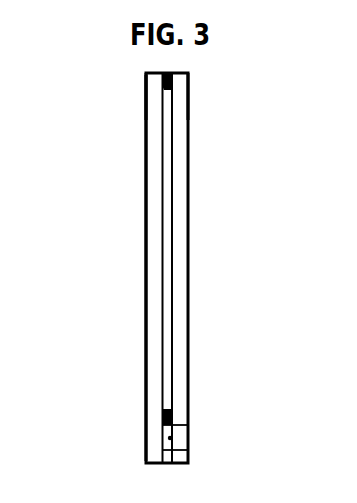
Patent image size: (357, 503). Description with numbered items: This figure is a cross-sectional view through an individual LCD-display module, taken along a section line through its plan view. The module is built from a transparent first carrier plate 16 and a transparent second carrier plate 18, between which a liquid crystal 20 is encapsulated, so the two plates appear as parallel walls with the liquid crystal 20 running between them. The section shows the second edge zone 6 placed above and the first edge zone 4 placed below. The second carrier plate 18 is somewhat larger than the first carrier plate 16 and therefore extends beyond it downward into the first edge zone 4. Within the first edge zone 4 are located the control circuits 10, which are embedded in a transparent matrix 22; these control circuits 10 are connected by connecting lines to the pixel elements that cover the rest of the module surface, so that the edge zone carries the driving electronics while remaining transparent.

The first edge zone 4 is at (130, 444).
The second edge zone 6 is at (129, 126).
The control circuits 10 is at (168, 445).
The first carrier plate 16 is at (190, 96).
The second carrier plate 18 is at (145, 96).
The liquid crystal 20 is at (172, 183).
The transparent matrix 22 is at (188, 428).